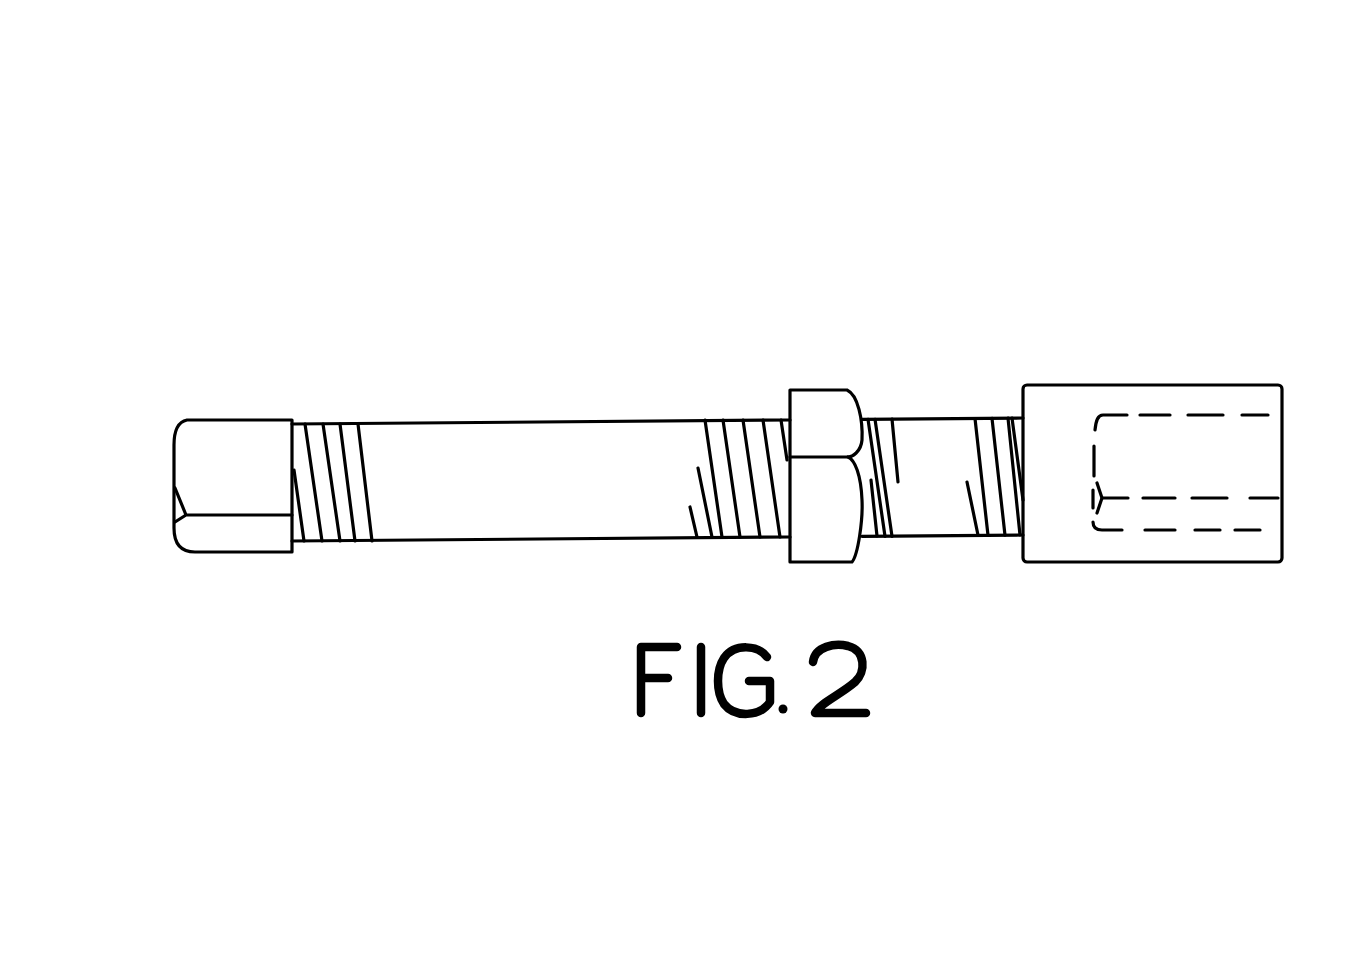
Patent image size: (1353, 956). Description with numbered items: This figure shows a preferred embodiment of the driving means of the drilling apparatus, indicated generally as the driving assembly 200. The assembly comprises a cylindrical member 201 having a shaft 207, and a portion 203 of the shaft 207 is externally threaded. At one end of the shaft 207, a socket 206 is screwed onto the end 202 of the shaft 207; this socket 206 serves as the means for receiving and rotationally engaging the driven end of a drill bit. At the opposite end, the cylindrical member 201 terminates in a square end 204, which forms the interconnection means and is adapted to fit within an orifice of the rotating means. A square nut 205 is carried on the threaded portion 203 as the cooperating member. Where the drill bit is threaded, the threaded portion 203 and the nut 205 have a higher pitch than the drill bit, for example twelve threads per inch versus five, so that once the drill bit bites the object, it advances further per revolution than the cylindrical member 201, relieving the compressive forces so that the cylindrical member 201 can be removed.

The bolt assembly 200 is at (518, 232).
The cylindrical member 201 is at (512, 388).
The end of the shaft 202 is at (1230, 535).
The threaded portion 203 is at (885, 419).
The square end 204 is at (208, 542).
The square nut 205 is at (812, 412).
The socket 206 is at (1155, 385).
The shaft 207 is at (382, 483).